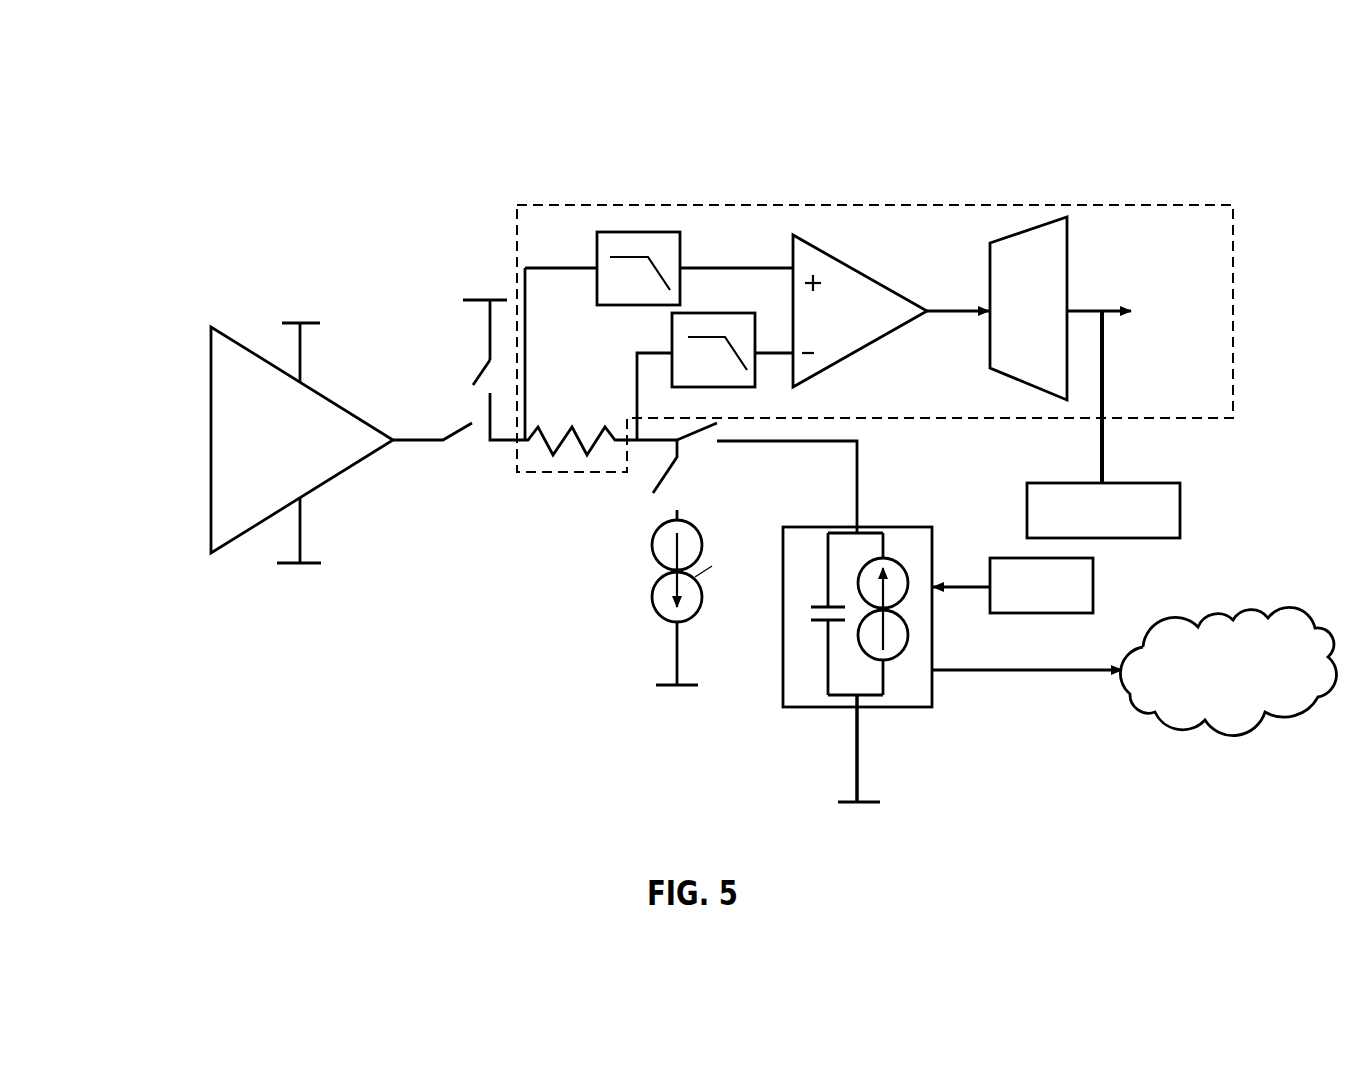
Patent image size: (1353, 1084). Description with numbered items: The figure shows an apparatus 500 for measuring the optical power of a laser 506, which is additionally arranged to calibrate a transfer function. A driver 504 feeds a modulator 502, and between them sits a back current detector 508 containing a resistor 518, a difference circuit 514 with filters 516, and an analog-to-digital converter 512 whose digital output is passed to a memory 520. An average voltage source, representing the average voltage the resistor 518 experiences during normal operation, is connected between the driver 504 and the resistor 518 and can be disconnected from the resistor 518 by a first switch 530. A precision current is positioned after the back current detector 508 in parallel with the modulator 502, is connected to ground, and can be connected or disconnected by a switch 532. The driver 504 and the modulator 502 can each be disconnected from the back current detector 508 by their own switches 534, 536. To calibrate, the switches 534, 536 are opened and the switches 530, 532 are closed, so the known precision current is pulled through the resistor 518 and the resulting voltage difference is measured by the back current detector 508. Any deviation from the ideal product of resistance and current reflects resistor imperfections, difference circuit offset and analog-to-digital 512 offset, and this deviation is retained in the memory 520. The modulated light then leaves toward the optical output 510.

The apparatus 500 is at (738, 111).
The modulator 502 is at (935, 697).
The driver 504 is at (207, 430).
The laser 506 is at (1093, 587).
The back current detector 508 is at (1071, 201).
The optical network 510 is at (1177, 727).
The analog-to-digital 512 is at (1069, 260).
The differential amplifier 514 is at (852, 267).
The low-pass filters 516 is at (714, 313).
The resistor 518 is at (572, 431).
The memory 520 is at (1182, 512).
The first switch 530 is at (480, 375).
The switch 532 is at (653, 488).
The switch 534 is at (450, 425).
The switch 536 is at (705, 428).